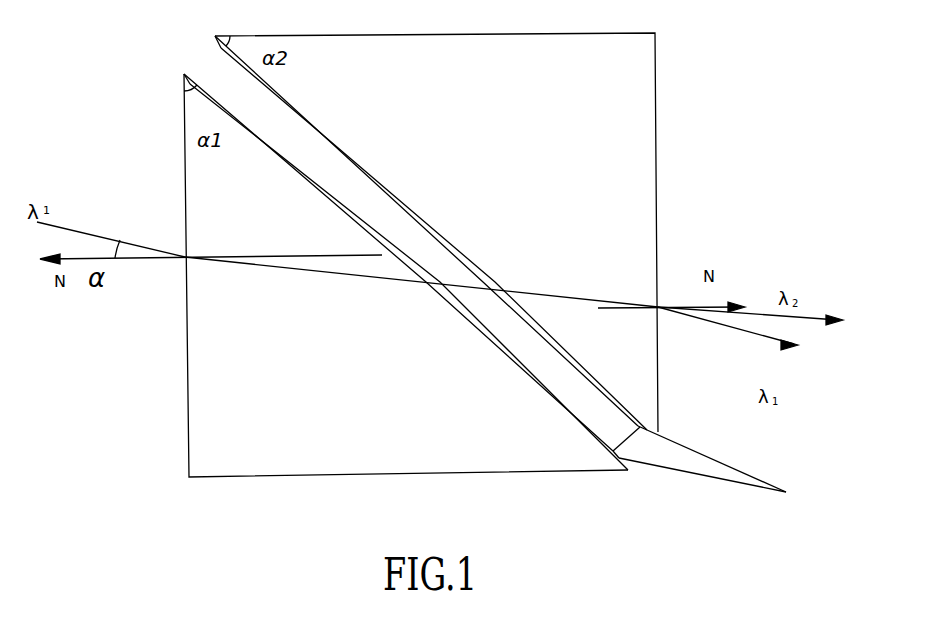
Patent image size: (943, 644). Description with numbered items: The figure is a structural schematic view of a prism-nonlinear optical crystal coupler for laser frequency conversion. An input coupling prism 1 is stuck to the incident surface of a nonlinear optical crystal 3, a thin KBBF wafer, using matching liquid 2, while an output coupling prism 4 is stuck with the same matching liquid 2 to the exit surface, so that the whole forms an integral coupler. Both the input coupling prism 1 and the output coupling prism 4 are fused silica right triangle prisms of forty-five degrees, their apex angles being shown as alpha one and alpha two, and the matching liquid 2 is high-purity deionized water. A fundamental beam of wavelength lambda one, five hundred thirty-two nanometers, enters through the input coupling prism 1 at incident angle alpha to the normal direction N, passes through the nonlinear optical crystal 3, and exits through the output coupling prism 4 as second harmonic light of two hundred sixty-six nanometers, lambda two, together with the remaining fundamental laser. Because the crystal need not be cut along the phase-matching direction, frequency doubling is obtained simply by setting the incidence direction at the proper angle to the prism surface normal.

The input coupling prism 1 is at (346, 285).
The matching liquid 2 is at (843, 491).
The nonlinear optical crystal 3 is at (213, 73).
The output coupling prism 4 is at (471, 232).